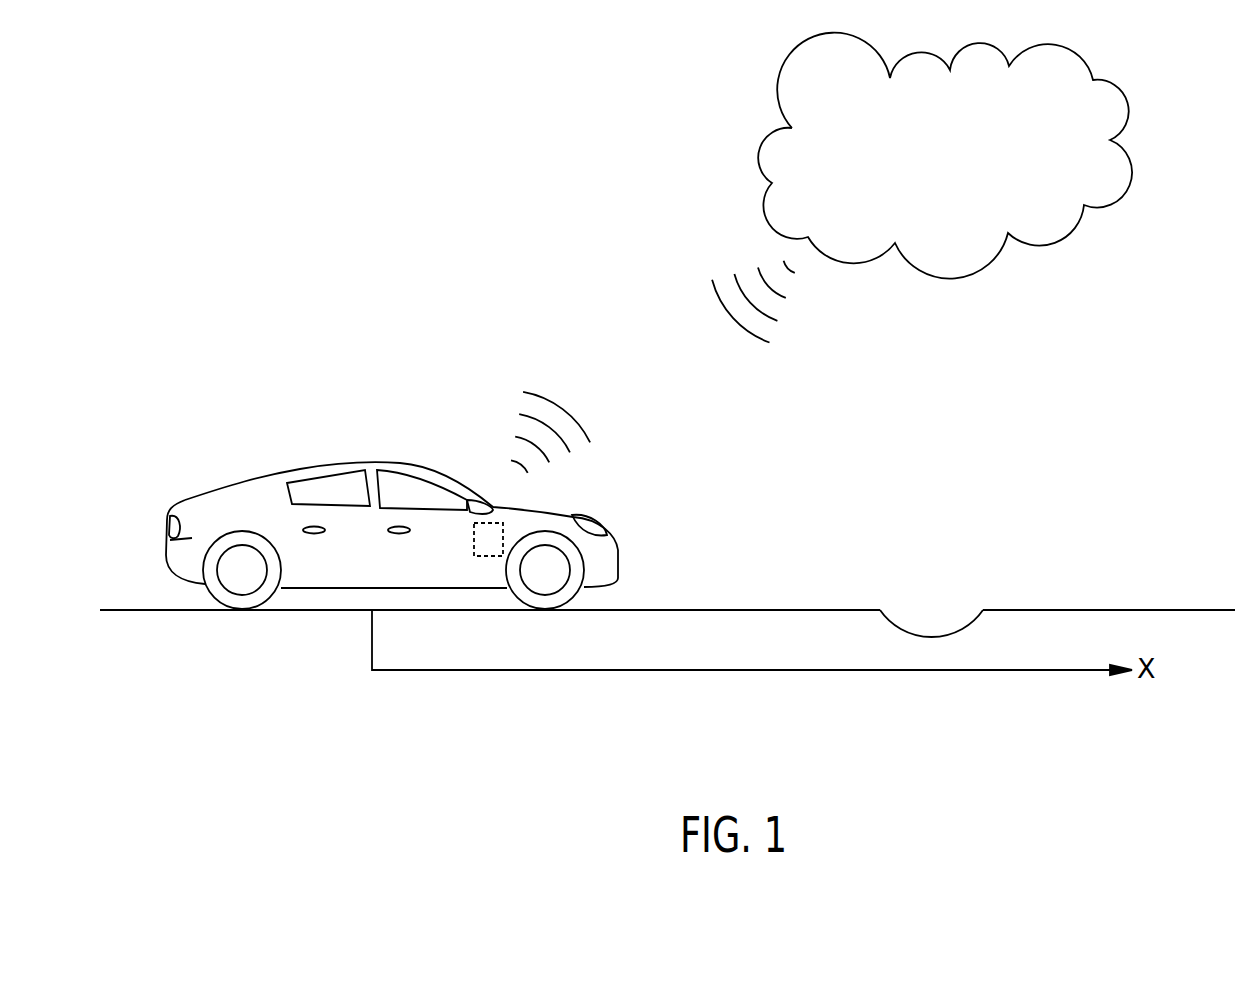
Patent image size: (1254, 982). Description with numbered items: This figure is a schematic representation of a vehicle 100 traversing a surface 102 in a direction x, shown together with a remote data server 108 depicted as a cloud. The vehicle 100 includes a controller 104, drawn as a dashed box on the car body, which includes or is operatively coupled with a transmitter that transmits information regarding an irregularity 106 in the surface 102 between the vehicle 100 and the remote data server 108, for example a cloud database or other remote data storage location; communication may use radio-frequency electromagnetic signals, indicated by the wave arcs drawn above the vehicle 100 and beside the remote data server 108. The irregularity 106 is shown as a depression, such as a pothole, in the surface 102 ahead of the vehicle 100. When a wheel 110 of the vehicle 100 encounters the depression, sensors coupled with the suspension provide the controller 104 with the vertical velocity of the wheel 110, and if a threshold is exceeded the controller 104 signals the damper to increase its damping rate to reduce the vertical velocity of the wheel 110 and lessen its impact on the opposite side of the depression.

The vehicle 100 is at (188, 344).
The surface 102 is at (722, 610).
The controller 104 is at (503, 532).
The irregularity 106 is at (938, 632).
The remote data server 108 is at (1063, 242).
The wheel 110 is at (543, 585).